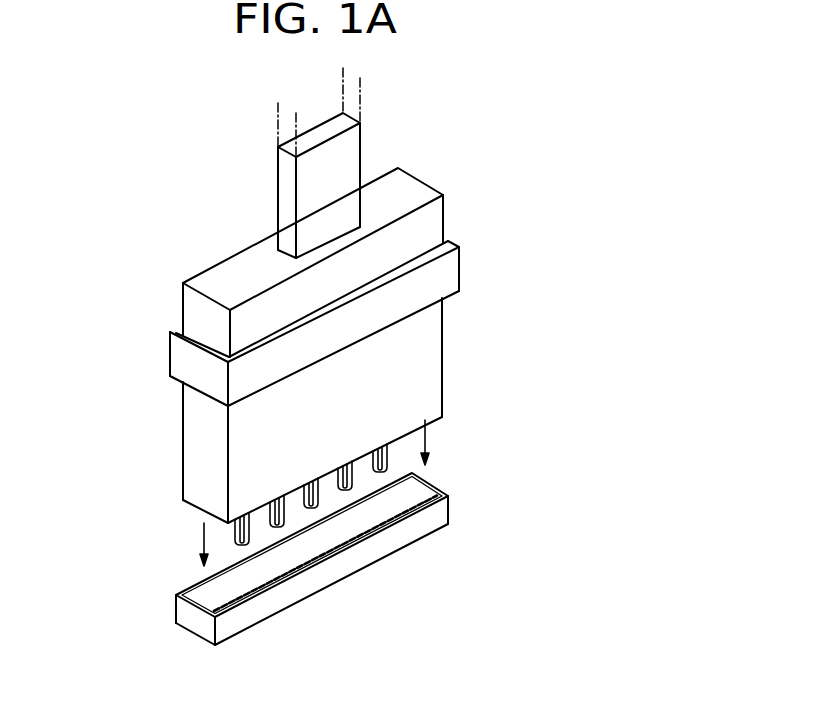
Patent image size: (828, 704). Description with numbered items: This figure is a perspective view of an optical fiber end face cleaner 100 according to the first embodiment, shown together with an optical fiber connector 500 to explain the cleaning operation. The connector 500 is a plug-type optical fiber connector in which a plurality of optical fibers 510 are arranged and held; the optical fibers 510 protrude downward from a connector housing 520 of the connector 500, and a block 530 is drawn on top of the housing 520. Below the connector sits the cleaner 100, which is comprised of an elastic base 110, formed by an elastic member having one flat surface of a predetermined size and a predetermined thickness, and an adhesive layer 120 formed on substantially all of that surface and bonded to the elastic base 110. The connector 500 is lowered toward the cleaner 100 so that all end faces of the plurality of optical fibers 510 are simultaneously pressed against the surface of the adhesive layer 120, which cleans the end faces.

The optical fiber connector 500 is at (486, 283).
The optical fibers 510 is at (388, 461).
The connector housing 520 is at (194, 433).
The connector body / mounting block 530 is at (307, 196).
The optical fiber end face cleaner 100 is at (472, 516).
The elastic base 110 is at (288, 596).
The adhesive layer 120 is at (213, 597).